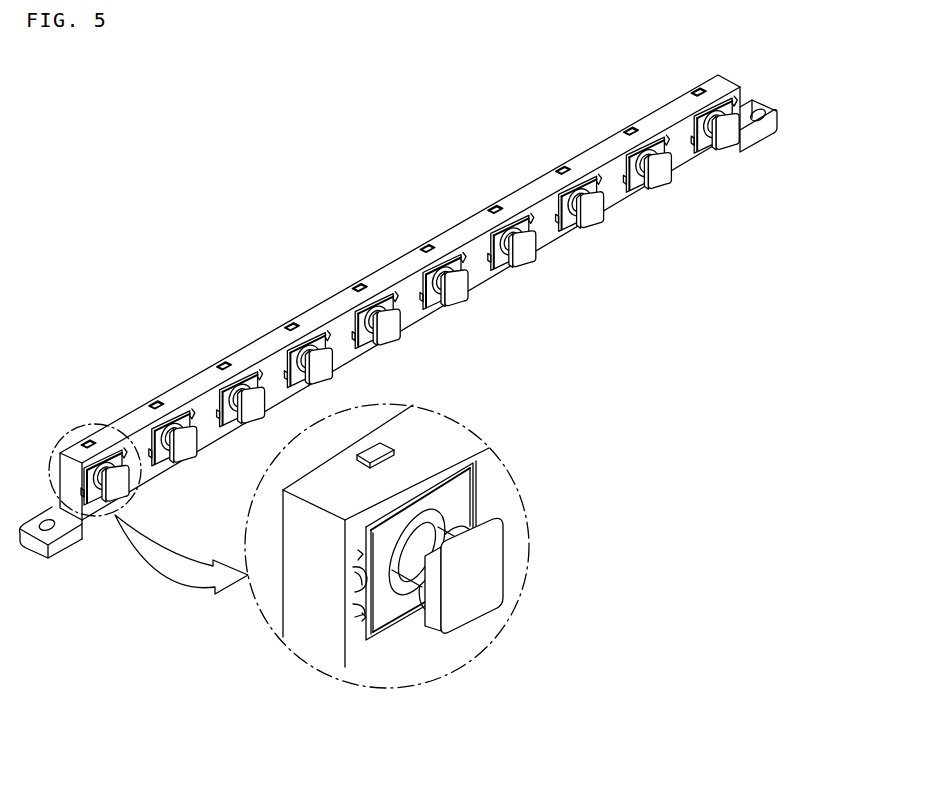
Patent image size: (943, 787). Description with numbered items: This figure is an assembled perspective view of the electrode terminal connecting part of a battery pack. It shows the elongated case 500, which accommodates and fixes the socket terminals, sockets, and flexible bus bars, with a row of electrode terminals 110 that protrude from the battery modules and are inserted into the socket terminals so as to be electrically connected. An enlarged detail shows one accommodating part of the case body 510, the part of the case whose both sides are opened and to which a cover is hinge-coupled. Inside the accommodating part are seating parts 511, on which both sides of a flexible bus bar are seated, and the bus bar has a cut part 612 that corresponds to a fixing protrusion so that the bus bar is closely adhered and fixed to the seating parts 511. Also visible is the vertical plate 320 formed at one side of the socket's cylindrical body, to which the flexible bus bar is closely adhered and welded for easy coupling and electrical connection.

The case 500 is at (603, 150).
The electrode terminal 110 is at (700, 113).
The case body 510 is at (460, 437).
The seating part 511 is at (358, 556).
The vertical plate 320 is at (402, 607).
The cut part 612 is at (373, 628).